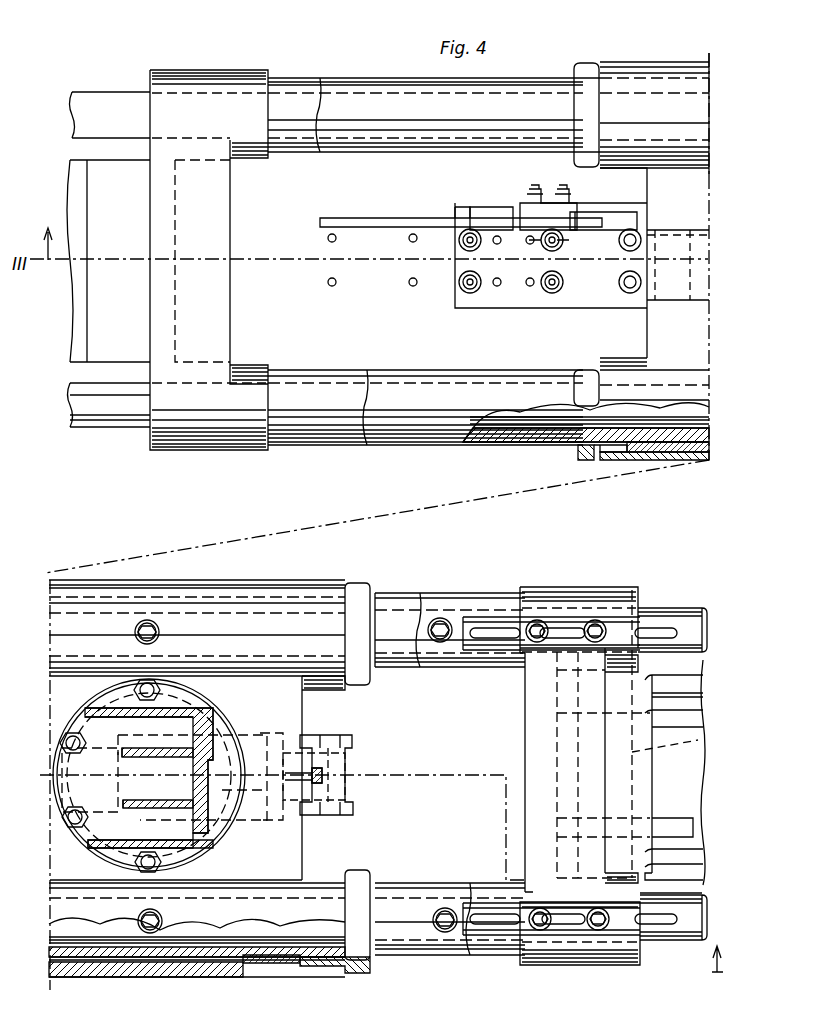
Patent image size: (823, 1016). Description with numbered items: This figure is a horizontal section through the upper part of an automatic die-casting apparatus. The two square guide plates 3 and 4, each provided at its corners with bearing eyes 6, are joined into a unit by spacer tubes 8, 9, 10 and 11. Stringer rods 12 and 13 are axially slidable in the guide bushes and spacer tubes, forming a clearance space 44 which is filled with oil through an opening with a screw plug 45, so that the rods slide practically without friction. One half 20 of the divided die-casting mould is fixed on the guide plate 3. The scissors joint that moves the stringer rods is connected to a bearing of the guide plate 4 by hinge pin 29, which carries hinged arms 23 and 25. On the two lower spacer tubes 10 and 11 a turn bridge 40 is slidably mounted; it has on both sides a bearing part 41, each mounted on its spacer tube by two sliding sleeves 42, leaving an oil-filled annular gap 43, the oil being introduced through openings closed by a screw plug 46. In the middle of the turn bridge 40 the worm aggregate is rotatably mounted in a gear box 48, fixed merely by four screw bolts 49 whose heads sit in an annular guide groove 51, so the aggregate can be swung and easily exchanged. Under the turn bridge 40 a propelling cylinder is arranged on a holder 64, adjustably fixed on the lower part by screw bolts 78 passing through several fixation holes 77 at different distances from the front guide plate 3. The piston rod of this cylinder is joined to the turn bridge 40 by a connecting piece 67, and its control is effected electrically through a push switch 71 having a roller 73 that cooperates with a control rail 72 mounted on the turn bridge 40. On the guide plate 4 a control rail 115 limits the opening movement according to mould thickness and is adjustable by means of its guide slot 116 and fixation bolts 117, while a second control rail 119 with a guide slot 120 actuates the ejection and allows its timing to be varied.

The square guide plate 3 is at (235, 203).
The square guide plate 4 is at (520, 705).
The bearing eye 6 is at (200, 72).
The spacer tube 8 is at (315, 446).
The spacer tube 9 is at (300, 78).
The spacer tube 10 is at (488, 443).
The spacer tube 11 is at (380, 80).
The stringer rod 12 is at (105, 420).
The stringer rod 13 is at (84, 96).
The half of the die-casting mould 20 is at (108, 175).
The hinged arm 23 is at (690, 672).
The hinged arm 25 is at (695, 810).
The hinge pin 29 is at (698, 745).
The turn bridge 40 is at (305, 856).
The bearing part 41 is at (268, 586).
The sliding sleeve 42 is at (650, 447).
The annular gap 43 is at (202, 960).
The clearance space 44 is at (545, 432).
The screw plug 45 is at (441, 620).
The screw plug 46 is at (150, 926).
The gear box 48 is at (205, 718).
The screw bolt 49 is at (73, 733).
The annular guide groove 51 is at (222, 825).
The holder 64 is at (518, 305).
The connecting piece 67 is at (354, 738).
The push switch 71 is at (466, 208).
The control rail 72 is at (422, 218).
The roller 73 is at (500, 215).
The fixation hole 77 is at (410, 234).
The screw bolt 78 is at (470, 290).
The control rail 115 is at (685, 612).
The guide slot 116 is at (655, 617).
The fixation bolt 117 is at (590, 620).
The control rail 119 is at (678, 930).
The guide slot 120 is at (628, 920).